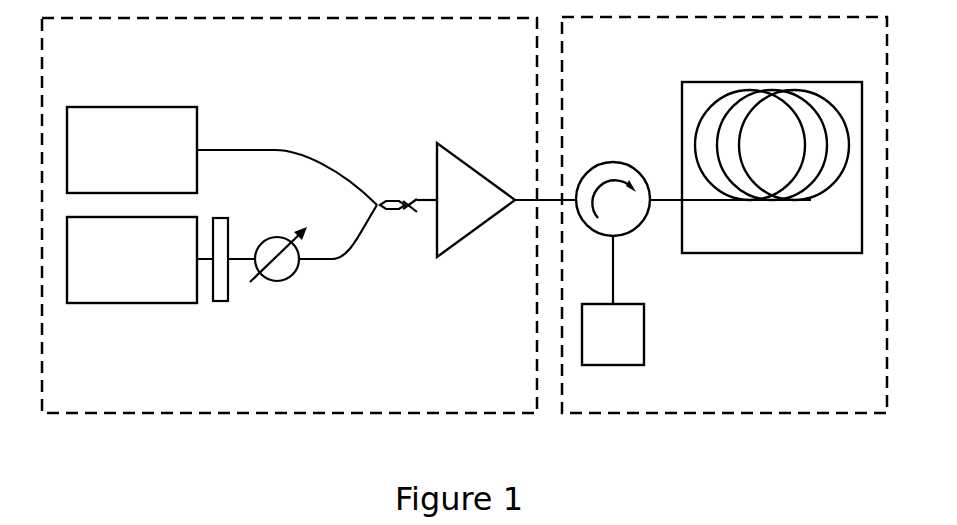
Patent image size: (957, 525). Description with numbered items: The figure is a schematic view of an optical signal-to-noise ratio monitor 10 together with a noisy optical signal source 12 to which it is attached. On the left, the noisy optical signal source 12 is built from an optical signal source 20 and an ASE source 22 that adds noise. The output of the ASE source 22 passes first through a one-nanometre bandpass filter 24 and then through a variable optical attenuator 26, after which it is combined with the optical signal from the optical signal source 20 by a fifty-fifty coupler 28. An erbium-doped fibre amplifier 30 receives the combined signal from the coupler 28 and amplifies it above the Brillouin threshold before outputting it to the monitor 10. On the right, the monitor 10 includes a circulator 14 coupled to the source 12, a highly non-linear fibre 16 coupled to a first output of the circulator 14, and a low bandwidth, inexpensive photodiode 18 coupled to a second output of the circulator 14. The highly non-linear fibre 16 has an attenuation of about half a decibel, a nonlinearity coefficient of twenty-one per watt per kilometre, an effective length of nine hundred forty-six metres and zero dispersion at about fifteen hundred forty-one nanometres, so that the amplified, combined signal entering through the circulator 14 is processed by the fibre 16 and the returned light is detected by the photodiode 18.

The optical signal-to-noise ratio monitor 10 is at (612, 60).
The noisy optical signal source 12 is at (92, 61).
The circulator 14 is at (623, 162).
The highly non-linear fibre 16 is at (720, 72).
The photodiode 18 is at (644, 337).
The optical signal source 20 is at (173, 107).
The ASE source 22 is at (130, 303).
The bandpass filter 24 is at (228, 297).
The variable optical attenuator 26 is at (300, 274).
The coupler 28 is at (395, 198).
The erbium-doped fibre amplifier 30 is at (468, 158).